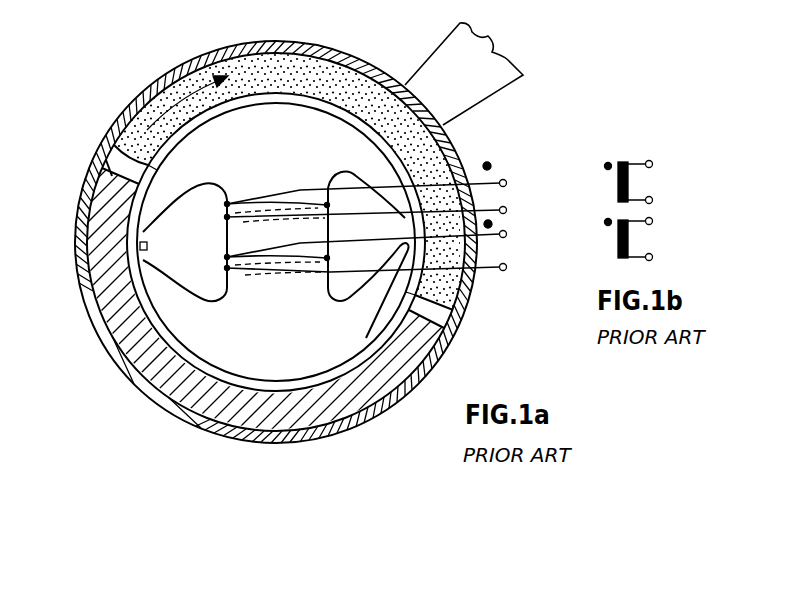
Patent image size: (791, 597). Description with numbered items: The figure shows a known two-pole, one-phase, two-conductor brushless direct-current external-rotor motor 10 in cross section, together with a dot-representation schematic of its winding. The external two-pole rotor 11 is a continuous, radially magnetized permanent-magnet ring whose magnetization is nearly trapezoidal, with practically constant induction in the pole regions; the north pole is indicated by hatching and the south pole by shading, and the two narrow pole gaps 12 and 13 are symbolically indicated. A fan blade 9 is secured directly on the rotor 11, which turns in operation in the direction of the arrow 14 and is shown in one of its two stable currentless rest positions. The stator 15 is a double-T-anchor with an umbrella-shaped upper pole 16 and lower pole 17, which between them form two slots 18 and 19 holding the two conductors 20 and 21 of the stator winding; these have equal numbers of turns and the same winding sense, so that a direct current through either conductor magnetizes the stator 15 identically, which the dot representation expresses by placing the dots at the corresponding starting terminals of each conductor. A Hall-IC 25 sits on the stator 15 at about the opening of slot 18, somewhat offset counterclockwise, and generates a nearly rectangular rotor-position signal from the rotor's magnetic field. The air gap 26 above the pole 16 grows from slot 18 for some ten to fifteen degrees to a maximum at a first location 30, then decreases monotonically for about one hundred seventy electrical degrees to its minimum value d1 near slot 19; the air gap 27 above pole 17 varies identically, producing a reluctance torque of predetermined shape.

In FIG. 1a, the fan blade 9 is at (490, 78).
In FIG. 1a, the external-rotor motor 10 is at (125, 81).
In FIG. 1a, the external two-pole rotor 11 is at (383, 70).
In FIG. 1a, the pole gap 12 is at (148, 158).
In FIG. 1a, the pole gap 13 is at (452, 323).
In FIG. 1a, the arrow 14 is at (178, 78).
In FIG. 1a, the stator 15 is at (263, 167).
In FIG. 1a, the upper pole 16 is at (304, 96).
In FIG. 1a, the lower pole 17 is at (380, 400).
In FIG. 1a, the slot 18 is at (208, 284).
In FIG. 1a, the slot 19 is at (347, 278).
In FIG. 1a, the conductor 20 is at (282, 194).
In FIG. 1b, the conductor 20 is at (618, 190).
In FIG. 1a, the conductor 21 is at (270, 262).
In FIG. 1b, the conductor 21 is at (618, 228).
In FIG. 1a, the Hall-IC 25 is at (148, 246).
In FIG. 1a, the air gap 26 is at (247, 98).
In FIG. 1a, the air gap 27 is at (278, 382).
In FIG. 1a, the first location 30 is at (120, 128).
In FIG. 1a, the minimum value d1 is at (455, 178).